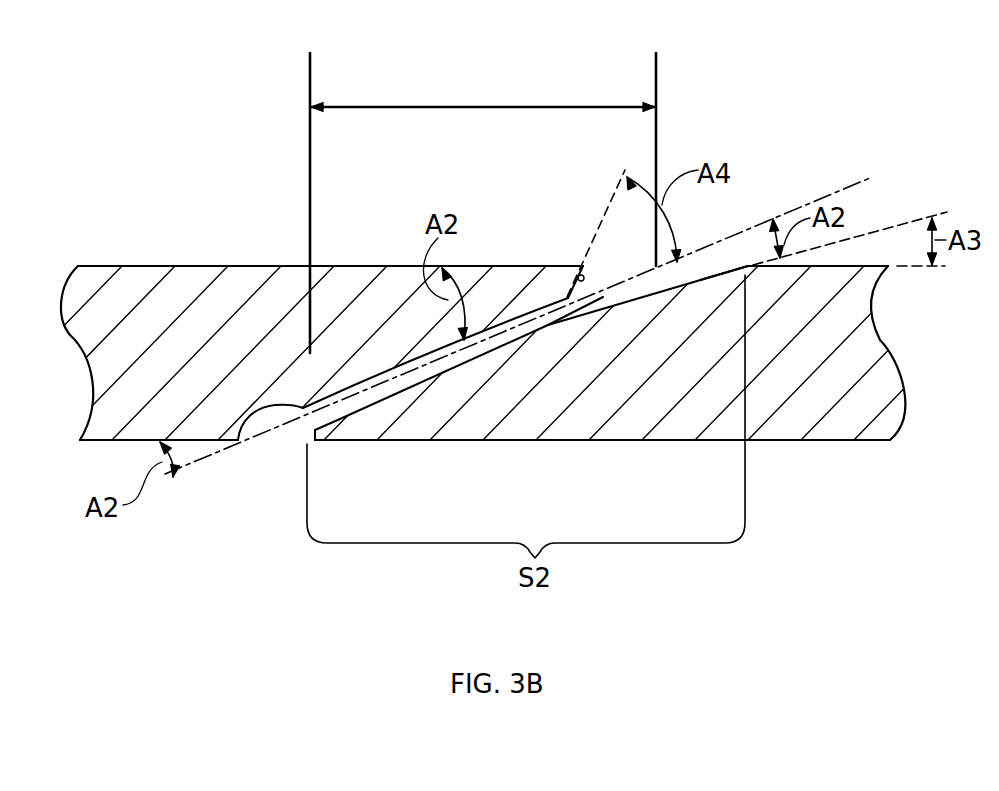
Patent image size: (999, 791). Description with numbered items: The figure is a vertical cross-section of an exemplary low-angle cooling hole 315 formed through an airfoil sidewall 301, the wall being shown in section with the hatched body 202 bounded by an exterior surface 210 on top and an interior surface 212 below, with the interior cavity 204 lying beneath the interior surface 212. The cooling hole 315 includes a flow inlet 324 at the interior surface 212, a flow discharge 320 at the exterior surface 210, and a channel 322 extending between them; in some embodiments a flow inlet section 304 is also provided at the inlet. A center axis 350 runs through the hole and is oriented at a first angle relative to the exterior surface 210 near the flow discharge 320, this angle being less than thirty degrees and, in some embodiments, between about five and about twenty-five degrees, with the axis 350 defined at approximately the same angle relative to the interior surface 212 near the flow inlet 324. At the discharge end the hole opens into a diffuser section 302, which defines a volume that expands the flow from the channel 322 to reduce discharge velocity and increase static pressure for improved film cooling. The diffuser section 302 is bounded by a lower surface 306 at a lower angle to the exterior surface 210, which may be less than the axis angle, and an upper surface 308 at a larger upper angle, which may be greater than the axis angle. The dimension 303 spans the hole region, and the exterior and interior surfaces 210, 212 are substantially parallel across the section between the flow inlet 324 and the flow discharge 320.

The airfoil wall 202 is at (200, 195).
The interior cavity 204 is at (137, 523).
The exterior surface 210 is at (212, 265).
The interior surface 212 is at (137, 442).
The airfoil sidewall 301 is at (178, 385).
The diffuser section 302 is at (652, 287).
The hole length dimension 303 is at (453, 103).
The flow inlet section 304 is at (283, 442).
The lower surface 306 is at (716, 274).
The upper surface 308 is at (577, 279).
The low-angle cooling hole 315 is at (381, 420).
The flow discharge 320 is at (583, 290).
The channel 322 is at (509, 347).
The flow inlet 324 is at (302, 434).
The center axis 350 is at (832, 193).